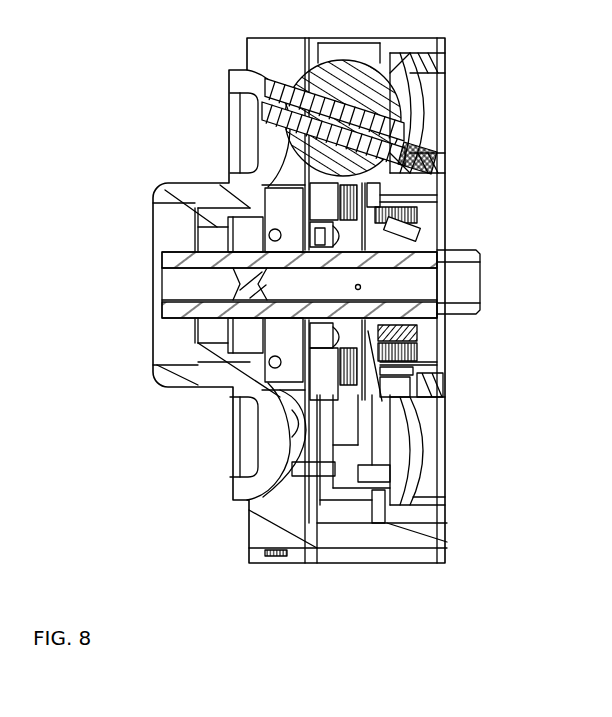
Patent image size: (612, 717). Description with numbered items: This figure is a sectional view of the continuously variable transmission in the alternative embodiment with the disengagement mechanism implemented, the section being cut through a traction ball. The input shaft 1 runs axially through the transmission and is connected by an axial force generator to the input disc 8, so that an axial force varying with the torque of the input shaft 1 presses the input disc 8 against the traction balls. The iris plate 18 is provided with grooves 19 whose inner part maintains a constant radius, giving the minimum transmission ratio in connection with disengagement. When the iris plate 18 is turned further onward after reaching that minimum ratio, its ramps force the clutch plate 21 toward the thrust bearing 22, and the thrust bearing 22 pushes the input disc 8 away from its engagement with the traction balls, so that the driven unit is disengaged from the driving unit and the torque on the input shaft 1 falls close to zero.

The input shaft 1 is at (290, 72).
The input disc 8 is at (282, 182).
The iris plate 18 is at (413, 107).
The grooves 19 is at (410, 125).
The clutch plate 21 is at (443, 188).
The thrust bearing 22 is at (433, 363).